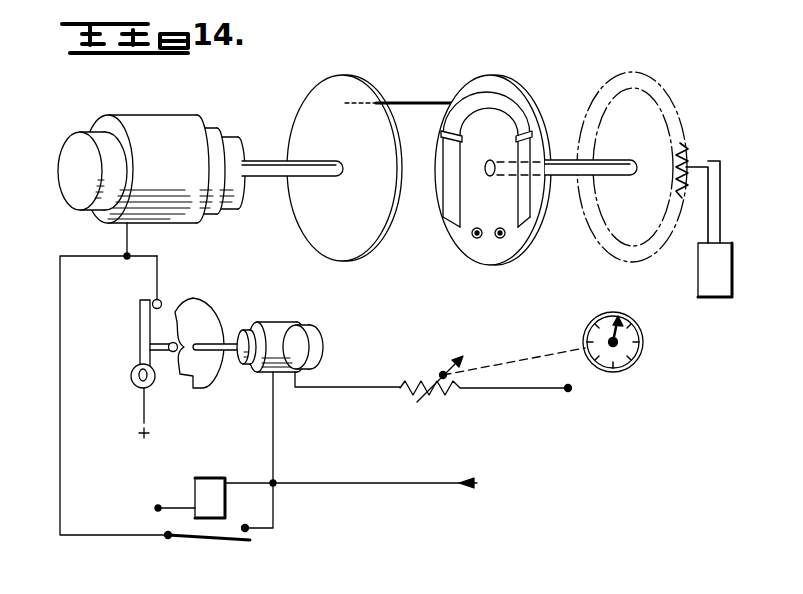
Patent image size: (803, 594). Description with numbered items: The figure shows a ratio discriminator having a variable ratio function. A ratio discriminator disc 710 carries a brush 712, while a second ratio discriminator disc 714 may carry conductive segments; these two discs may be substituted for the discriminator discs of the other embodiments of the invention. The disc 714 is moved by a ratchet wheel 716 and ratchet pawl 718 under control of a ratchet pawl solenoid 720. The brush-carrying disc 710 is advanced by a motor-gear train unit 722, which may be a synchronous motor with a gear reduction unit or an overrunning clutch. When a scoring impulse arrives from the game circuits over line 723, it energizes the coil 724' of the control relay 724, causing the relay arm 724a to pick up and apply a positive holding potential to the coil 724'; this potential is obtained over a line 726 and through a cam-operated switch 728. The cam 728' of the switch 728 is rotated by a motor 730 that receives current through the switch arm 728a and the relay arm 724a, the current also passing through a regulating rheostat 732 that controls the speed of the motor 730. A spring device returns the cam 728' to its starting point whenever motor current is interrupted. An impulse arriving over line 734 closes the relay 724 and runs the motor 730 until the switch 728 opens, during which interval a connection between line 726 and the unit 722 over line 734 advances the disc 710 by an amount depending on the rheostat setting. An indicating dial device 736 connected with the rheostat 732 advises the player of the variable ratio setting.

The ratio discriminator disc 710 is at (356, 78).
The brush 712 is at (422, 100).
The second ratio discriminator disc 714 is at (510, 88).
The ratchet wheel 716 is at (642, 88).
The ratchet pawl 718 is at (718, 178).
The ratchet pawl solenoid 720 is at (698, 270).
The motor-gear train unit 722 is at (166, 115).
The line 723 is at (376, 493).
The control relay 724 is at (208, 558).
The relay coil 724' is at (197, 497).
The relay arm 724a is at (248, 542).
The line 726 is at (60, 423).
The cam-operated switch 728 is at (194, 399).
The cam 728' is at (219, 319).
The switch arm 728a is at (140, 312).
The motor 730 is at (291, 322).
The regulating rheostat 732 is at (449, 394).
The line 734 is at (122, 234).
The indicating dial device 736 is at (620, 368).